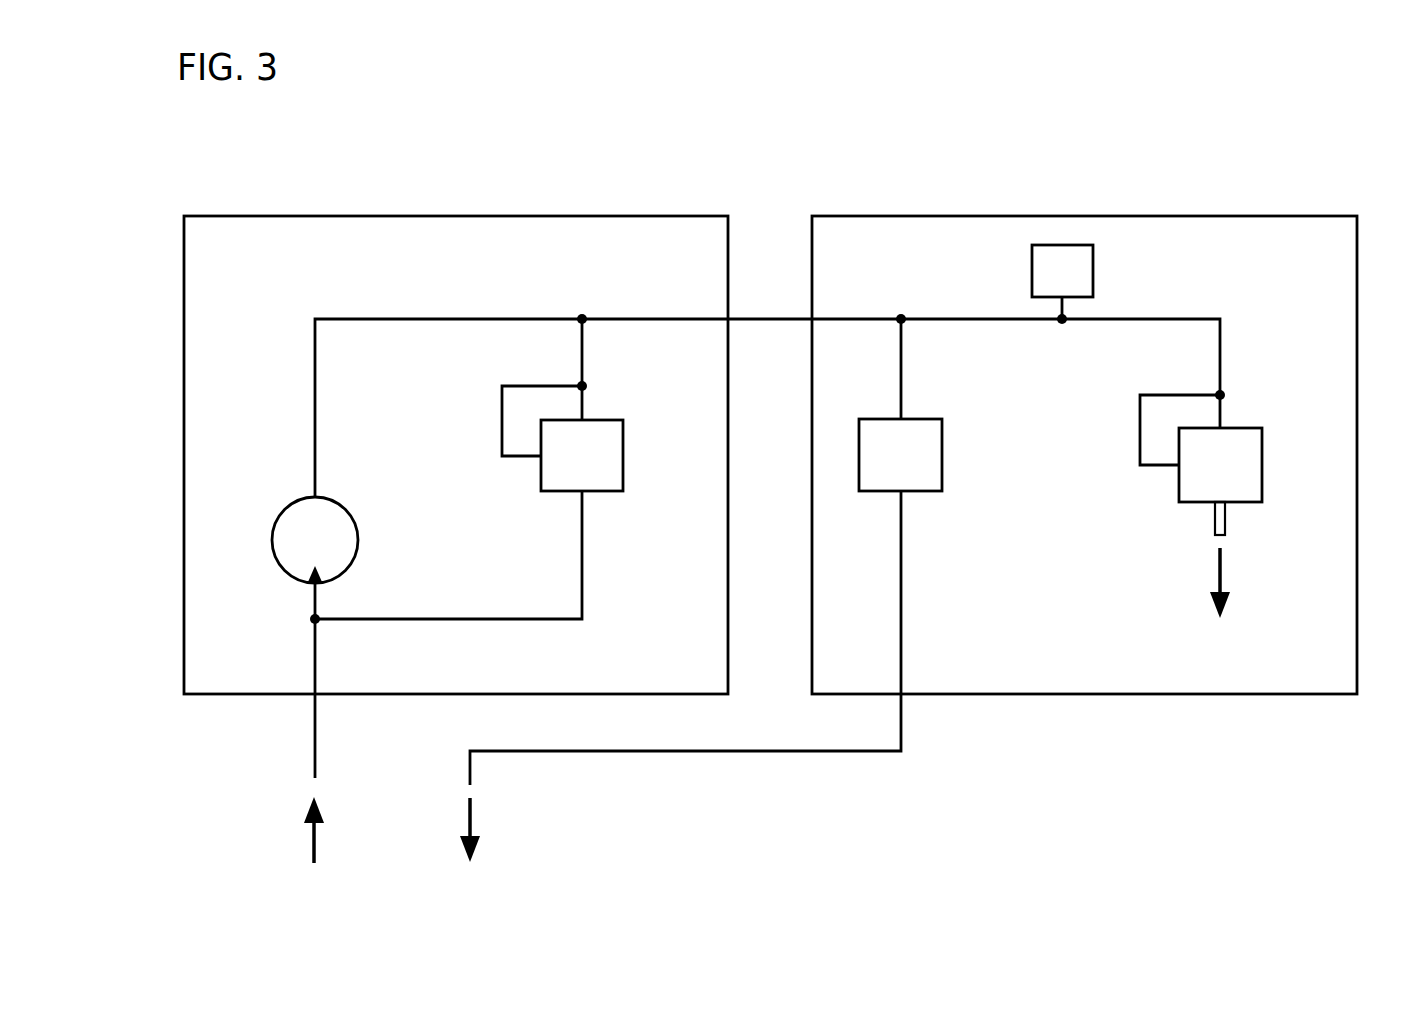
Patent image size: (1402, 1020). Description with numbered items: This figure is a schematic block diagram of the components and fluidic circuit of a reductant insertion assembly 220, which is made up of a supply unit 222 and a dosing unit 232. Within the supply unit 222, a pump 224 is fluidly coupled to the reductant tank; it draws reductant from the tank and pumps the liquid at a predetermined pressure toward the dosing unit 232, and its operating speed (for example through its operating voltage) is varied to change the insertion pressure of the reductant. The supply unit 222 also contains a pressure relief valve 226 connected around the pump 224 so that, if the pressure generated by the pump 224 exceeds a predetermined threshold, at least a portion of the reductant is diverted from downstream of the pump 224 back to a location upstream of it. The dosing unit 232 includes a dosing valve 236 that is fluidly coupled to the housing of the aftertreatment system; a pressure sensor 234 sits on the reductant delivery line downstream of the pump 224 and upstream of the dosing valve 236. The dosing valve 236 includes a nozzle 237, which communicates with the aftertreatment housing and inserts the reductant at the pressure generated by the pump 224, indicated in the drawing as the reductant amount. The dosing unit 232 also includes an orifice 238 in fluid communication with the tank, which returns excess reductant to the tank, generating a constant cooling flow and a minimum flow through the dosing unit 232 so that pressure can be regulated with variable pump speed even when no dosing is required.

The reductant insertion assembly 220 is at (1148, 107).
The supply unit 222 is at (472, 199).
The pump 224 is at (338, 553).
The pressure relief valve 226 is at (610, 468).
The dosing unit 232 is at (1228, 201).
The pressure sensor 234 is at (1078, 270).
The dosing valve 236 is at (1247, 478).
The nozzle 237 is at (1226, 525).
The orifice 238 is at (928, 447).